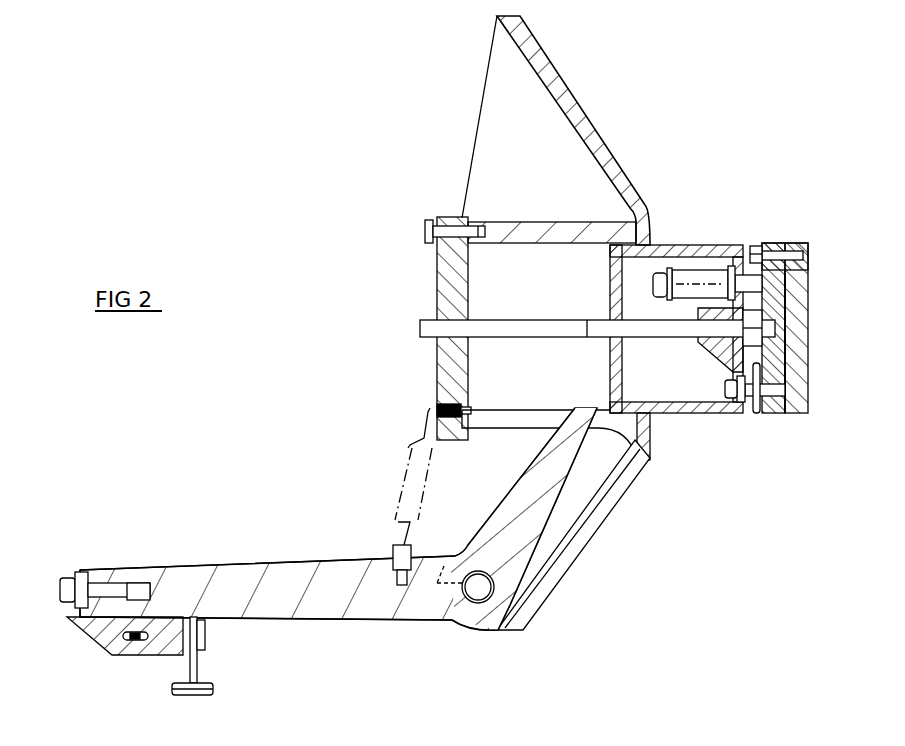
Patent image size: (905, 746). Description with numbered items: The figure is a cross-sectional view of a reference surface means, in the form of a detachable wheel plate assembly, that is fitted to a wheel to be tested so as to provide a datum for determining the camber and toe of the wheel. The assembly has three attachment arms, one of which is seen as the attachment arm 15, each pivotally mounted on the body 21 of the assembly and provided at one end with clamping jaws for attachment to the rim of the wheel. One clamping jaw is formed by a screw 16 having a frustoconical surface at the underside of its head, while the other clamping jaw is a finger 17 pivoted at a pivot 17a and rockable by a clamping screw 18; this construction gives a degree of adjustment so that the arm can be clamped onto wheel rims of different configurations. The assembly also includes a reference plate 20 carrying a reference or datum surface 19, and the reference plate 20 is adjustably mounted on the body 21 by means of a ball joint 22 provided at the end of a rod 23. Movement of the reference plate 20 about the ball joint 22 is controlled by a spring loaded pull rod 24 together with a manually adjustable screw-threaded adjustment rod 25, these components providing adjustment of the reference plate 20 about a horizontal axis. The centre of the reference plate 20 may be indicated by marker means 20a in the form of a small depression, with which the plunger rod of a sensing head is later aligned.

The attachment arm 15 is at (253, 565).
The screw 16 is at (60, 593).
The finger 17 is at (92, 632).
The pivot 17a is at (136, 643).
The clamping screw 18 is at (200, 672).
The reference surface 19 is at (808, 375).
The reference plate 20 is at (793, 402).
The marker means 20a is at (790, 325).
The body 21 is at (690, 413).
The ball joint 22 is at (786, 352).
The rod 23 is at (672, 330).
The spring loaded pull rod 24 is at (700, 285).
The screw-threaded adjustment rod 25 is at (757, 415).